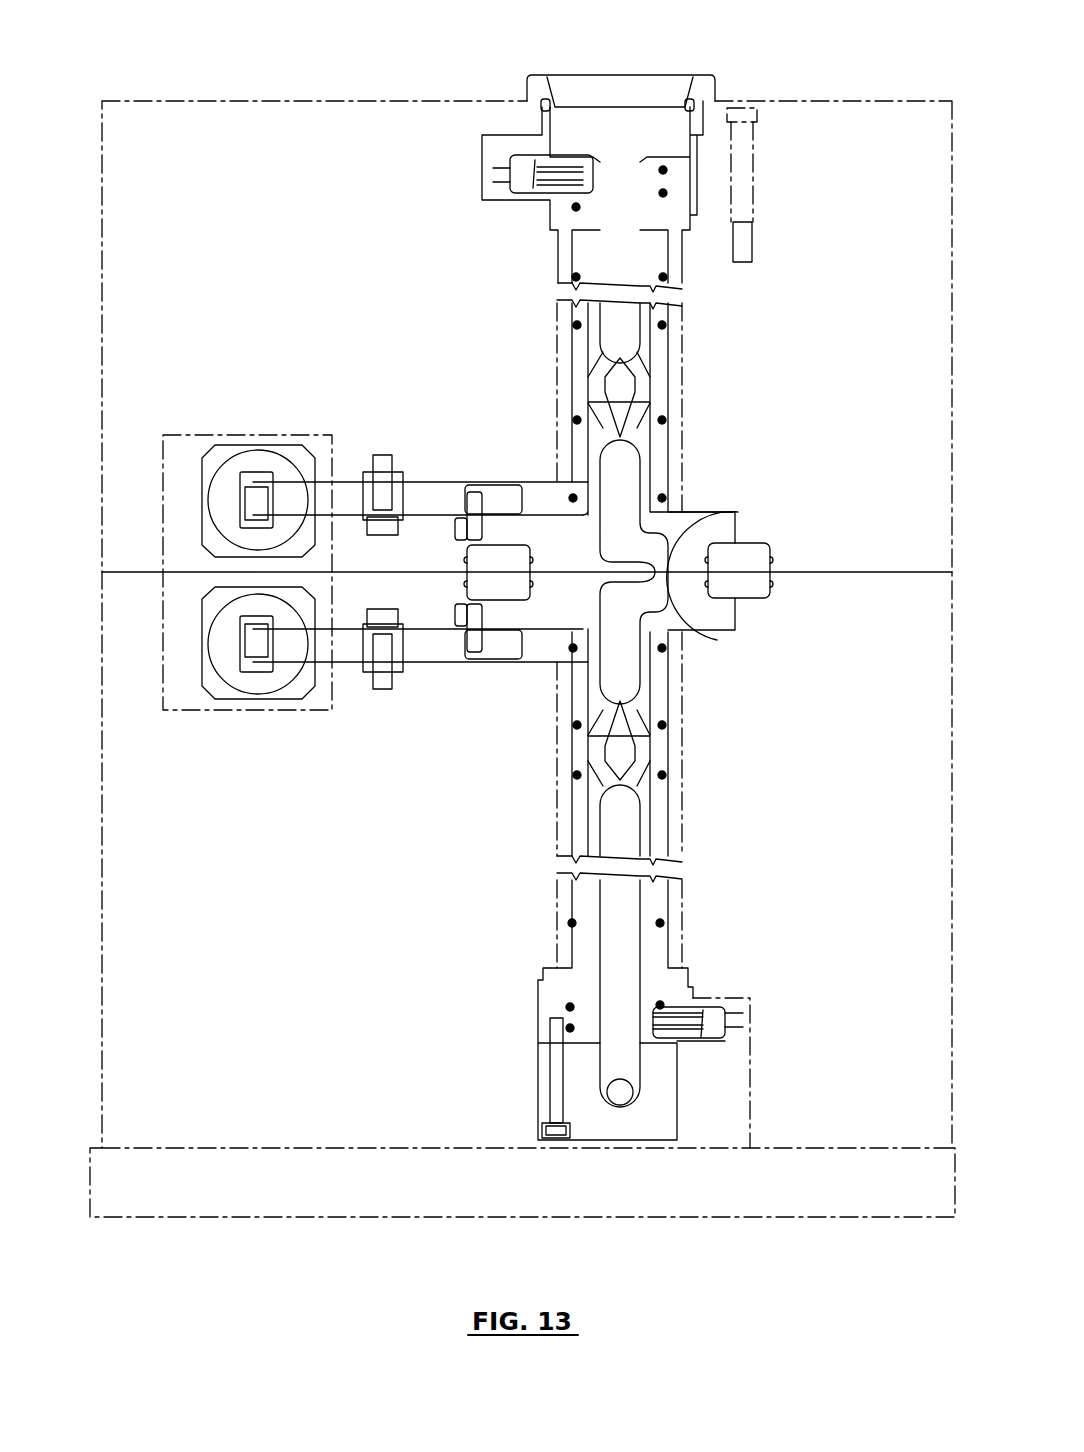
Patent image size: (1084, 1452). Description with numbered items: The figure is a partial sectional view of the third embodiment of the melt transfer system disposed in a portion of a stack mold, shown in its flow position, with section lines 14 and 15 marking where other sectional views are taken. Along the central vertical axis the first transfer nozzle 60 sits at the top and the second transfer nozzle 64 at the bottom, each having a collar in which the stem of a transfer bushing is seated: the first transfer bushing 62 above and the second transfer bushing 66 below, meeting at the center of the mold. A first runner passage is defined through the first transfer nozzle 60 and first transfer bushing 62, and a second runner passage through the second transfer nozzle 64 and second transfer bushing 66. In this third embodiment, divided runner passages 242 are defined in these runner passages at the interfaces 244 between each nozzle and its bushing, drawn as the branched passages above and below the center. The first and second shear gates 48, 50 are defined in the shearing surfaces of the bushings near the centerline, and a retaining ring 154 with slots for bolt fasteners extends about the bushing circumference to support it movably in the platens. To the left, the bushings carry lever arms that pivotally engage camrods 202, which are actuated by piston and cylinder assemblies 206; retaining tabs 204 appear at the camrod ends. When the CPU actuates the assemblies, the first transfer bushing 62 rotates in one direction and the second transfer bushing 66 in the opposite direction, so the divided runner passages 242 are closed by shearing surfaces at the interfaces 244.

The section line 14- 14 is at (618, 45).
The section line 15- 15 is at (386, 835).
The first shear gate 48 is at (700, 528).
The second shear gate 50 is at (693, 635).
The first transfer nozzle 60 is at (650, 256).
The first transfer bushing 62 is at (683, 523).
The second transfer nozzle 64 is at (648, 813).
The second transfer bushing 66 is at (710, 612).
The retaining ring 154 is at (750, 560).
The camrod 202 is at (433, 502).
The retaining tab 204 is at (475, 502).
The piston and cylinder assembly 206 is at (203, 436).
The divided runner passage 242 is at (602, 350).
The interface 244 is at (603, 405).